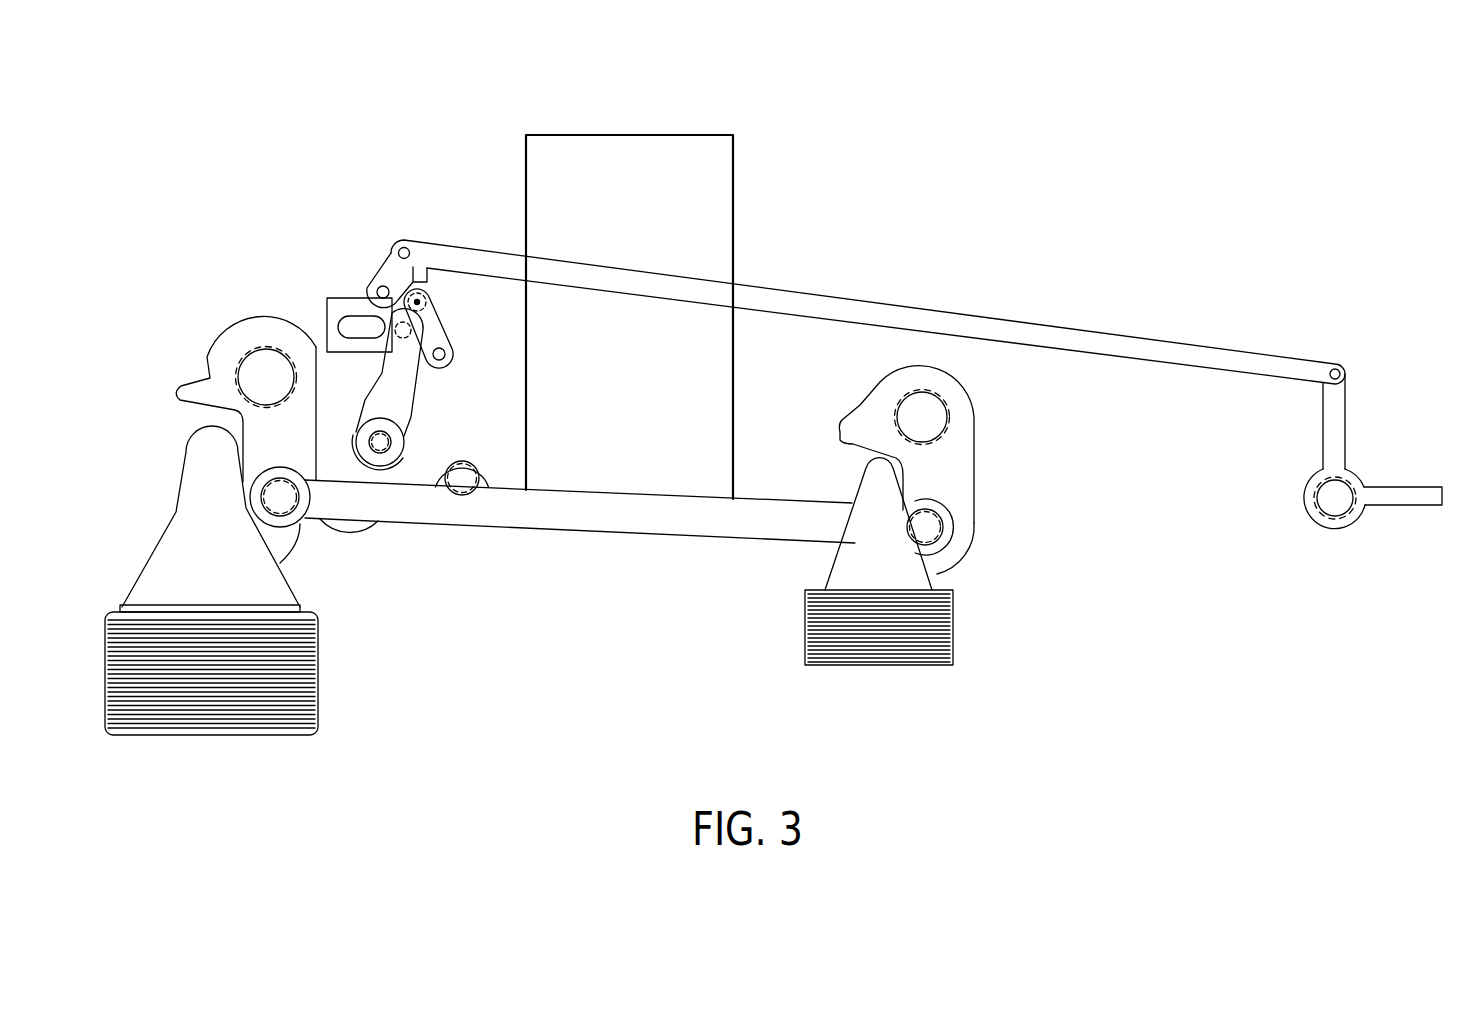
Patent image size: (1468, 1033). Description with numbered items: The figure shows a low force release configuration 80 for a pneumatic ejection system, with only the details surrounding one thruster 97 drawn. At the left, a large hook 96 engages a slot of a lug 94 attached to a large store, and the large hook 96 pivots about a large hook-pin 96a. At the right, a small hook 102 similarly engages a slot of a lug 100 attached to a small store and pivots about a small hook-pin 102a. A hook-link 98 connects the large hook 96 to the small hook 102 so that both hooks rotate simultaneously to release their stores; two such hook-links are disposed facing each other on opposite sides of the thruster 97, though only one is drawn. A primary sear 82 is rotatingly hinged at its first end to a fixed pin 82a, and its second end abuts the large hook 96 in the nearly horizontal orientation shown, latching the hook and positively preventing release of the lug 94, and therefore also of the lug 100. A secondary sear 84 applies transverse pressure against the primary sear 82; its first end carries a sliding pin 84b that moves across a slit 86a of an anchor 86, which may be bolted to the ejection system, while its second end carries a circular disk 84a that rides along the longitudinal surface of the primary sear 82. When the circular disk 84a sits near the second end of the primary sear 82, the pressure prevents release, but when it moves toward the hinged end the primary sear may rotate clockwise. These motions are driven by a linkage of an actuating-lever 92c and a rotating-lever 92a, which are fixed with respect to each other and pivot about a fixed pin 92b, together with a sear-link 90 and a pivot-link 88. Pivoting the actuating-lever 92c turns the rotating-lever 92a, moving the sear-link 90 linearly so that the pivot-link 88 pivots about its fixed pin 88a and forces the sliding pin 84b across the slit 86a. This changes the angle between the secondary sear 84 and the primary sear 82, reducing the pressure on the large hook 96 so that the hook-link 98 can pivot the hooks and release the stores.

The low force release configuration 80 is at (1195, 112).
The primary sear 82 is at (346, 470).
The fixed pin 82a is at (457, 484).
The secondary sear 84 is at (405, 372).
The circular disk 84a is at (412, 446).
The sliding pin 84b is at (424, 283).
The anchor 86 is at (333, 305).
The slit 86a is at (372, 323).
The pivot-link 88 is at (455, 335).
The fixed pin 88a is at (428, 306).
The sear-link 90 is at (908, 305).
The rotating-lever 92a is at (1325, 435).
The fixed pin 92b is at (1336, 512).
The actuating-lever 92c is at (1408, 498).
The lug 94 is at (165, 563).
The large hook 96 is at (246, 340).
The large hook-pin 96a is at (232, 362).
The thruster 97 is at (638, 478).
The hook-link 98 is at (760, 540).
The lug 100 is at (862, 577).
The small hook 102 is at (945, 482).
The small hook-pin 102a is at (938, 420).